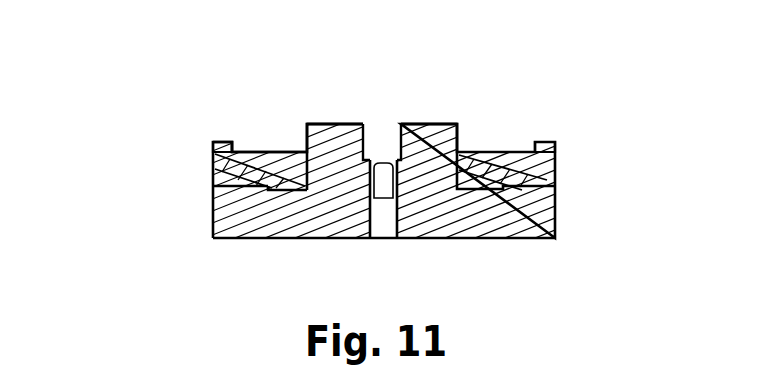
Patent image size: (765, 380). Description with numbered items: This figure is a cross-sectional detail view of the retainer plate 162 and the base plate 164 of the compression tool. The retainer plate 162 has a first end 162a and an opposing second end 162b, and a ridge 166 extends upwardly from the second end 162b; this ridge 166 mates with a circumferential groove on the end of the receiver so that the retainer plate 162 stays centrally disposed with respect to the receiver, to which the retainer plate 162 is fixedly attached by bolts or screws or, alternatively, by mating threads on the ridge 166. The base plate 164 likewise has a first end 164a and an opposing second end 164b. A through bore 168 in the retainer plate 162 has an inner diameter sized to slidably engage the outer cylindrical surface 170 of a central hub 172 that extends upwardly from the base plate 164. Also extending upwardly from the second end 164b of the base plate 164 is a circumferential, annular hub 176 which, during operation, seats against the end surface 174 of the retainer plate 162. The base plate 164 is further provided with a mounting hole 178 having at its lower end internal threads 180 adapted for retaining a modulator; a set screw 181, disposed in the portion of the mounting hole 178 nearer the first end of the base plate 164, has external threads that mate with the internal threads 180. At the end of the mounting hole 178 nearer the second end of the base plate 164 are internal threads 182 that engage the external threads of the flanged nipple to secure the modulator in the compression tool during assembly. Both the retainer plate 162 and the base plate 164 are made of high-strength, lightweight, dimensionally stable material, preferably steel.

The retainer plate 162 is at (553, 132).
The first end 162a is at (213, 160).
The second end 162b is at (270, 150).
The base plate 164 is at (428, 120).
The first end 164a is at (243, 238).
The second end 164b is at (303, 192).
The ridge 166 is at (222, 142).
The through bore 168 is at (311, 166).
The outer cylindrical surface 170 is at (555, 150).
The central hub 172 is at (357, 126).
The end surface 174 is at (240, 190).
The annular hub 176 is at (545, 171).
The mounting hole 178 is at (393, 135).
The internal threads 180 is at (387, 200).
The set screw 181 is at (377, 200).
The internal threads 182 is at (465, 152).